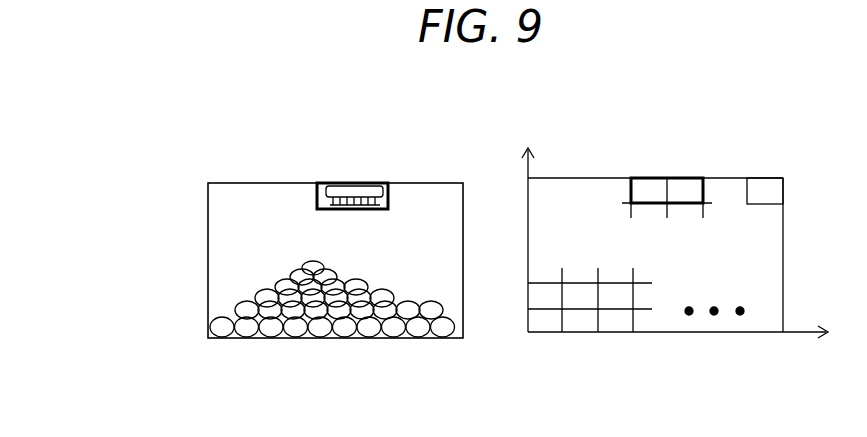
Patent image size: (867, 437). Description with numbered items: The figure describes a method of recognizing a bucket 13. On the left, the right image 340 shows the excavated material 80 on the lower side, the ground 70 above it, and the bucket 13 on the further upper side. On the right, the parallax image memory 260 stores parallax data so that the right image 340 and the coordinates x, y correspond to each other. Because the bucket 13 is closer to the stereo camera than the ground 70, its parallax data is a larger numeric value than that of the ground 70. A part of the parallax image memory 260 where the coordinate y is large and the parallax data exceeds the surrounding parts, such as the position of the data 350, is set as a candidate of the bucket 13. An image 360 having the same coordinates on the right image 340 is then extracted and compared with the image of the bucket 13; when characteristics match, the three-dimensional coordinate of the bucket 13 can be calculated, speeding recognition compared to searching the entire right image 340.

The right image 340 is at (208, 217).
The image 360 is at (317, 200).
The bucket 13 is at (360, 190).
The ground 70 is at (250, 246).
The excavated material 80 is at (272, 326).
The parallax image memory 260 is at (711, 178).
The data 350 is at (631, 190).